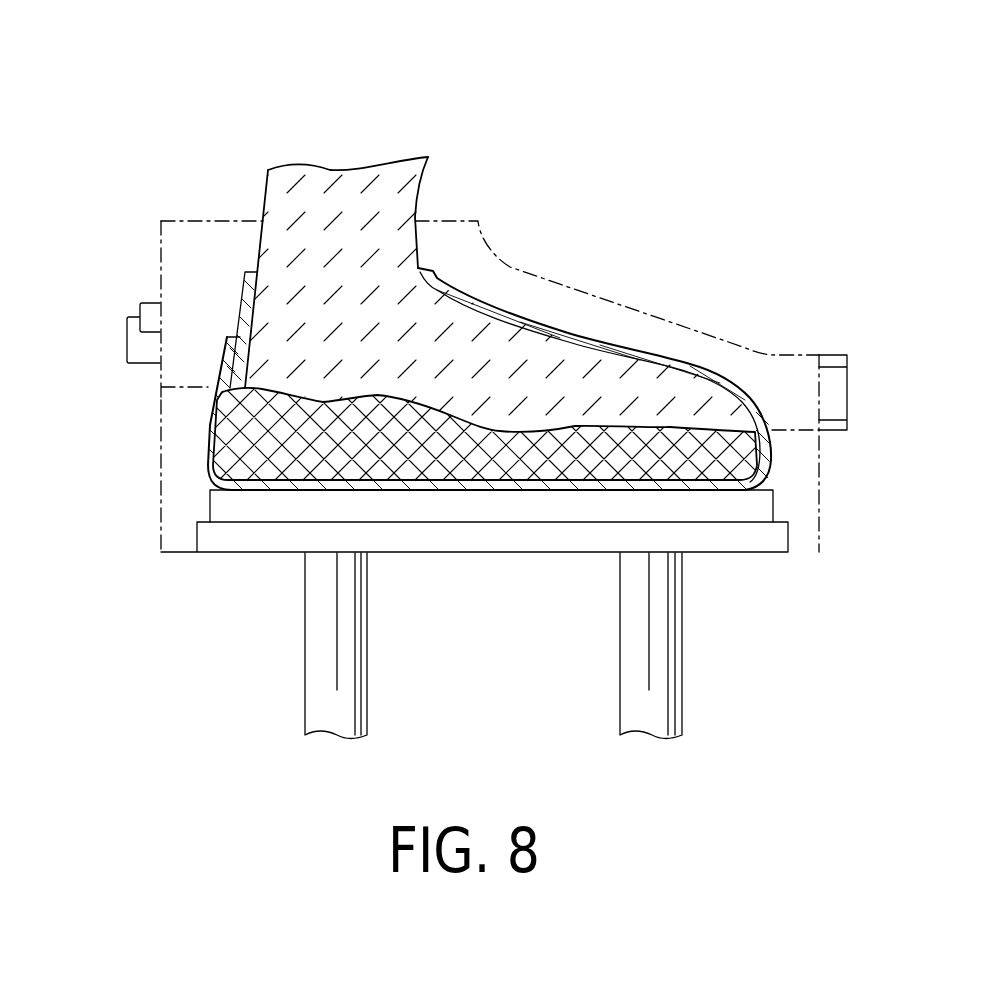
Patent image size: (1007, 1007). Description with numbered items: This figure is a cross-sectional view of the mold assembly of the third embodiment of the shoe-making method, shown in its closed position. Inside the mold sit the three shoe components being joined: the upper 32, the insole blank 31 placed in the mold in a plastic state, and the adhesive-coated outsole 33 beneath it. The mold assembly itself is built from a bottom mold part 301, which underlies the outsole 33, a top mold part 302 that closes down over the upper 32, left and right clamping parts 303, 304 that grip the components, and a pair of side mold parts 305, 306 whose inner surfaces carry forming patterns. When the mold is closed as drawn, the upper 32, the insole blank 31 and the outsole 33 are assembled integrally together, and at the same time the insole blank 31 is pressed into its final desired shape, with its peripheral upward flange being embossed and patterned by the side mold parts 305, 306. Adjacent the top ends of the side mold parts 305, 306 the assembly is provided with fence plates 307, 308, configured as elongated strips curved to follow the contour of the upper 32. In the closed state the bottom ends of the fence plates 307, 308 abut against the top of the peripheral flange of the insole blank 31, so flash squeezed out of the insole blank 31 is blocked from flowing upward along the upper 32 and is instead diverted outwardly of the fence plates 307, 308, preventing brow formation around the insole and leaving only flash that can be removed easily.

The top mold part 302 is at (338, 290).
The upper 32 is at (728, 377).
The insole blank 31 is at (650, 455).
The outsole 33 is at (690, 492).
The bottom mold part 301 is at (673, 507).
The left clamping part 303 is at (213, 235).
The right clamping part 304 is at (490, 288).
The side mold part 305 is at (183, 498).
The side mold part 306 is at (809, 453).
The fence plate 307 is at (232, 380).
The fence plate 308 is at (434, 437).